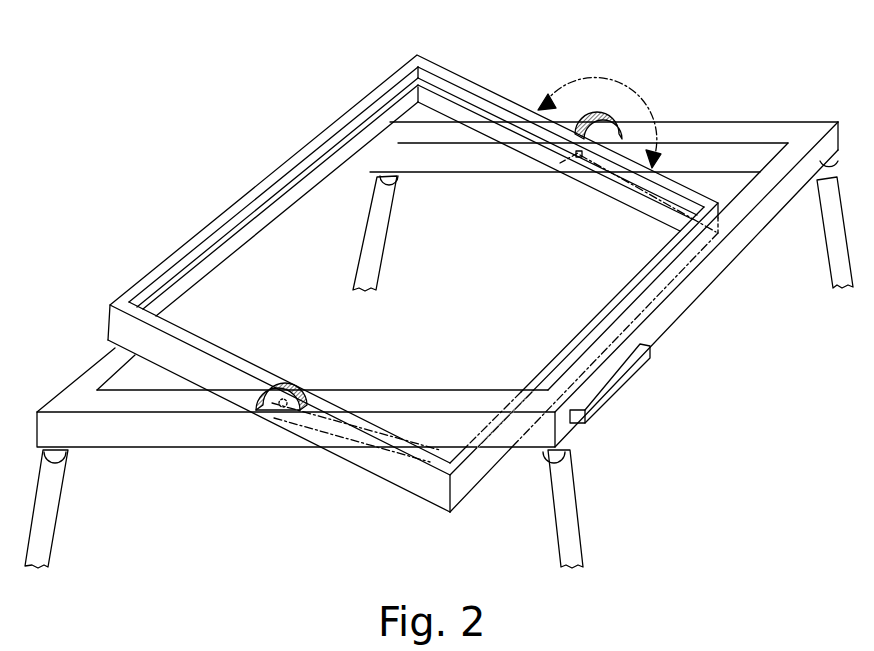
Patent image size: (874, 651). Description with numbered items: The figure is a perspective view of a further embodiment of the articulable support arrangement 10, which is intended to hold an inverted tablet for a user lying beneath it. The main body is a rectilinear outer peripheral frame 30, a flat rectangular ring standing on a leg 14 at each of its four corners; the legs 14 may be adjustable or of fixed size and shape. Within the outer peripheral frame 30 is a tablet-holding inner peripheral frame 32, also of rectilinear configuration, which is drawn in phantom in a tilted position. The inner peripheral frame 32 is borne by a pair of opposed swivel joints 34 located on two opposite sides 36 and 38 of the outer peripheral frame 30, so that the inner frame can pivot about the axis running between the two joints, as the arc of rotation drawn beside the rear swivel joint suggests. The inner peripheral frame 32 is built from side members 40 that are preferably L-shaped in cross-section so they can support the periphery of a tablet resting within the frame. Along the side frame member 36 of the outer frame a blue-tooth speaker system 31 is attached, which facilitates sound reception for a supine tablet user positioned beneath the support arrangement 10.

The support arrangement 10 is at (174, 194).
The leg 14 is at (382, 258).
The outer peripheral frame 30 is at (437, 281).
The blue-tooth speaker system 31 is at (618, 385).
The inner peripheral frame 32 is at (413, 266).
The swivel joints 34 is at (588, 127).
The side frame member 36 is at (190, 428).
The side 38 is at (786, 128).
The side members 40 is at (262, 182).